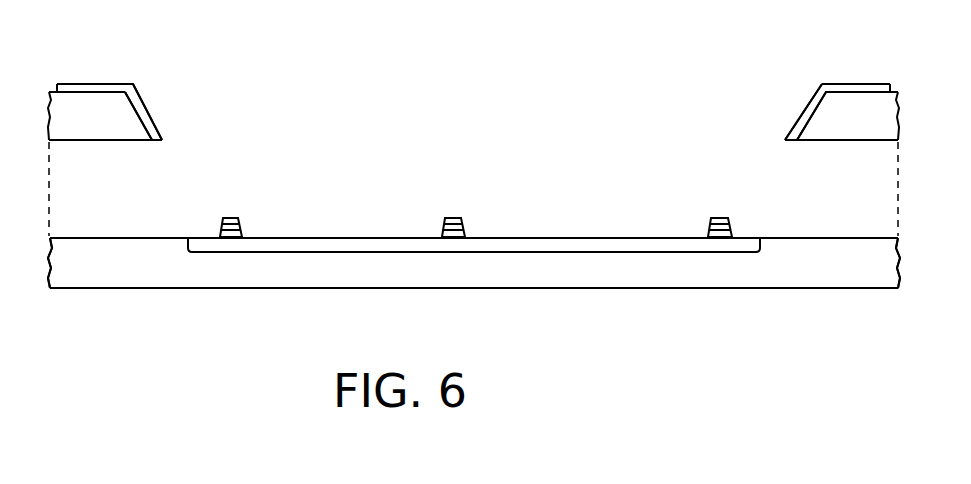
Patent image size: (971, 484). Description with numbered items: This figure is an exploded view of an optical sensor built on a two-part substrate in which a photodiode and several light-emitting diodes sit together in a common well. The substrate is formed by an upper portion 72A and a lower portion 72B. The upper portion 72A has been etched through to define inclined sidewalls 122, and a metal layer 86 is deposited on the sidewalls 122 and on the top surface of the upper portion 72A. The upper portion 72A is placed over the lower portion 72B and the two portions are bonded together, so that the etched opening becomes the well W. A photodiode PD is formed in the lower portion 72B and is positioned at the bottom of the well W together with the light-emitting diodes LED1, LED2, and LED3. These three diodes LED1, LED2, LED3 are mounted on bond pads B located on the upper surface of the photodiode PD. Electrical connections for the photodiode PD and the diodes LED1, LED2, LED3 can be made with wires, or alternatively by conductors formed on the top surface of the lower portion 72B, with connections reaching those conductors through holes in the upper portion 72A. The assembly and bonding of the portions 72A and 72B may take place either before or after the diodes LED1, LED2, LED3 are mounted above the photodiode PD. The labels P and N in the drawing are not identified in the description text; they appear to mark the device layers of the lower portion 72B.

The upper portion 72A is at (49, 128).
The lower portion 72B is at (50, 270).
The metal layer 86 is at (133, 84).
The inclined sidewalls 122 is at (140, 122).
The light-emitting diode LED1 is at (239, 195).
The light-emitting diode LED2 is at (728, 197).
The light-emitting diode LED3 is at (461, 196).
The bond pads B is at (243, 236).
The panel P is at (333, 247).
The photodiode PD is at (589, 232).
The well W is at (668, 78).
The substrate N is at (474, 263).